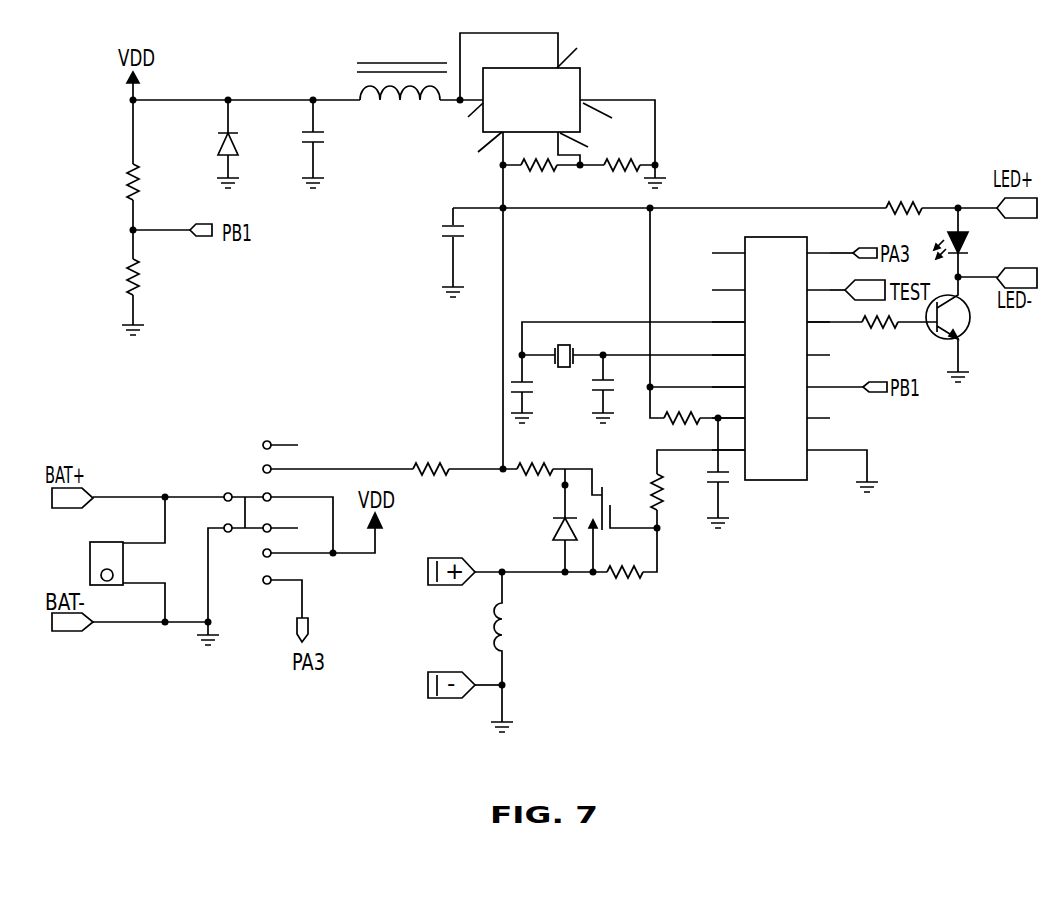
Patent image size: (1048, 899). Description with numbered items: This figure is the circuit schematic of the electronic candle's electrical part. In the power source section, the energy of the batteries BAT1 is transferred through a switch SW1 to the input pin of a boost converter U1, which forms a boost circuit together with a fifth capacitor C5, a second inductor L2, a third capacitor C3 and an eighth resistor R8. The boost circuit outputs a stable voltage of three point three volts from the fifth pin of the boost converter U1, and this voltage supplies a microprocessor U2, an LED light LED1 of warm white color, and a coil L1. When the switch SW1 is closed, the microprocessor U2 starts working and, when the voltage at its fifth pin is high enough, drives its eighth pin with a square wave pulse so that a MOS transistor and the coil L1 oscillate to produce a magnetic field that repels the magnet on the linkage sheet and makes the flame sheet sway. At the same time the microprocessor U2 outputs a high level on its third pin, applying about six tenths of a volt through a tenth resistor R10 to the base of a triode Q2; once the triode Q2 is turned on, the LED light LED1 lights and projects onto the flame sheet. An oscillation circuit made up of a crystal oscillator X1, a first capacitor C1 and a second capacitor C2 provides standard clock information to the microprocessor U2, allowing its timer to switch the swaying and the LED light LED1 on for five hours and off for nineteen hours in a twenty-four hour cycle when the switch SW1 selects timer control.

The boost converter U1 is at (543, 95).
The microprocessor U2 is at (771, 345).
The coil L1 is at (491, 652).
The second inductor L2 is at (402, 68).
The first capacitor C1 is at (534, 389).
The second capacitor C2 is at (614, 389).
The third capacitor C3 is at (441, 252).
The fifth capacitor C5 is at (329, 144).
The eighth resistor R8 is at (541, 180).
The tenth resistor R10 is at (872, 335).
The triode Q2 is at (962, 329).
The crystal oscillator X1 is at (562, 344).
The switch SW1 is at (255, 501).
The batteries BAT1 is at (127, 559).
The LED light LED1 is at (980, 242).